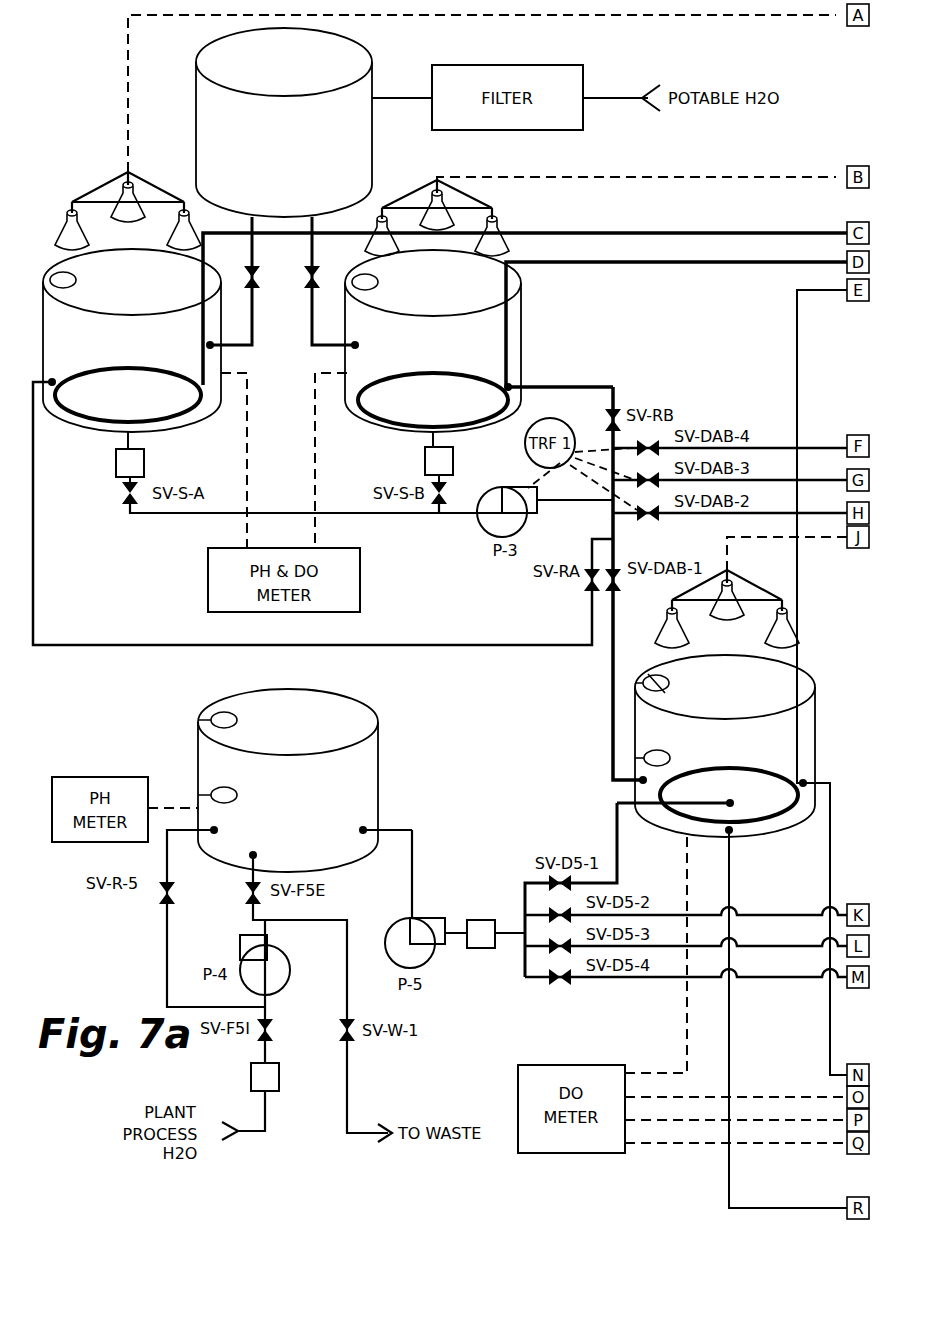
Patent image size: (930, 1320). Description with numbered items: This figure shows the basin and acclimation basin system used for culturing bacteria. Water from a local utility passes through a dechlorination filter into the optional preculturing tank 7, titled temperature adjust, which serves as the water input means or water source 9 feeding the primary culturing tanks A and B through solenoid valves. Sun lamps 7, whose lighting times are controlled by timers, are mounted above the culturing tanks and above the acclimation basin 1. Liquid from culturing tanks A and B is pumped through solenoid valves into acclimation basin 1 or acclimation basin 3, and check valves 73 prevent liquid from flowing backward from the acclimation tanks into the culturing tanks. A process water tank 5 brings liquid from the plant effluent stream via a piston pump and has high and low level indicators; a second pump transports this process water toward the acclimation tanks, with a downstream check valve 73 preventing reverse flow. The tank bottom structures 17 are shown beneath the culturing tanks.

The acclimation basin 1 is at (41, 290).
The acclimation basin 3 is at (617, 717).
The process water tank 5 is at (288, 780).
The temperature adjust tank / sun lamps 7 is at (790, 642).
The water input means 9 is at (252, 336).
The tank bottom 17 is at (172, 424).
The check valve 73 is at (116, 466).